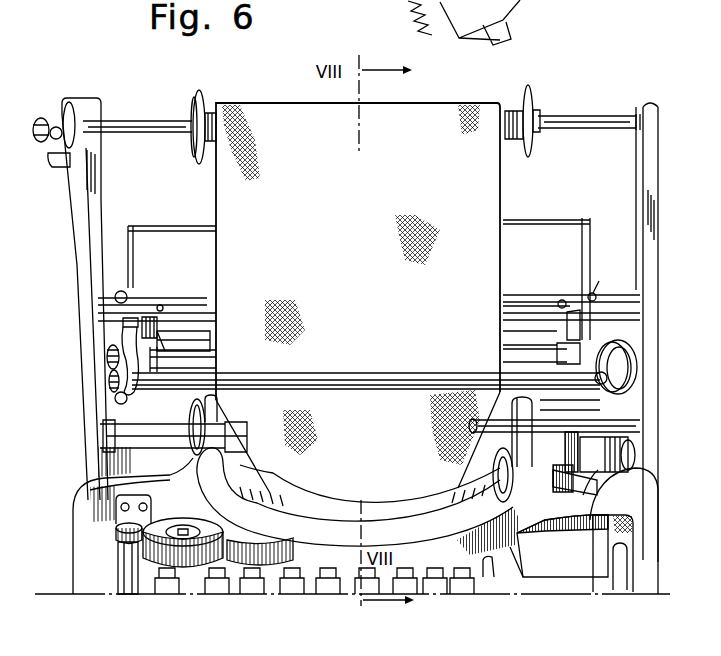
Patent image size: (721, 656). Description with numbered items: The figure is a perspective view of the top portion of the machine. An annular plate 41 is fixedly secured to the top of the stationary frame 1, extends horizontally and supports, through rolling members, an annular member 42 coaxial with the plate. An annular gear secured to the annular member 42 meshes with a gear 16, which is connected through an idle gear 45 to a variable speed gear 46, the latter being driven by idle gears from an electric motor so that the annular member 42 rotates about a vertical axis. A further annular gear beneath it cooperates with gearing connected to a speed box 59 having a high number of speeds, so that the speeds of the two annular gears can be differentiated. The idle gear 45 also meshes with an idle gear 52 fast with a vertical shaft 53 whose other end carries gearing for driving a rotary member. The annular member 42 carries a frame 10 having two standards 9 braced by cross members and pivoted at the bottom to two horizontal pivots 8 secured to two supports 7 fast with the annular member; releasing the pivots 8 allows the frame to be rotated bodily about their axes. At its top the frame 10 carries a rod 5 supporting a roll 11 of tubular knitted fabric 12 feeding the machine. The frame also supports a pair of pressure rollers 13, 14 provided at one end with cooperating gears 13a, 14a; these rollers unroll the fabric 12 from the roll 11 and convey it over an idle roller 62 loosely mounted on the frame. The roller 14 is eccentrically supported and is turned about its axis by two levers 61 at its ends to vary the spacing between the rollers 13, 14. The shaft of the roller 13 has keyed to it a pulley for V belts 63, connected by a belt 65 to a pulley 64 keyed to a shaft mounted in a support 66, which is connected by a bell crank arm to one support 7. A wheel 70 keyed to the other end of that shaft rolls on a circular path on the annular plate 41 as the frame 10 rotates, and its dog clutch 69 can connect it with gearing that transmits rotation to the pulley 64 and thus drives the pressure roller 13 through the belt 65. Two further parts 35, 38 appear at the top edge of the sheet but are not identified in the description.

The frame 1 is at (630, 559).
The rod 5 is at (574, 117).
The support 7 is at (217, 424).
The horizontal pivot 8 is at (150, 441).
The standard 9 is at (642, 178).
The frame 10 is at (69, 268).
The roll 11 is at (479, 102).
The tubular knitted fabric 12 is at (490, 182).
The pressure roller 13 is at (358, 377).
The gear 13a is at (112, 378).
The pressure roller 14 is at (200, 357).
The gear 14a is at (107, 356).
The gear 16 is at (250, 549).
The arm piece 35 is at (507, 34).
The spring 38 is at (396, 2).
The annular plate 41 is at (400, 547).
The annular member 42 is at (358, 513).
The idle gear 45 is at (160, 527).
The variable speed gear 46 is at (120, 582).
The idle gear 52 is at (115, 538).
The vertical shaft 53 is at (118, 562).
The speed box 59 is at (530, 560).
The lever 61 is at (127, 393).
The idle roller 62 is at (512, 339).
The pulley for V belts 63 is at (628, 375).
The pulley 64 is at (656, 484).
The belt 65 is at (640, 456).
The support 66 is at (597, 480).
The dog clutch 69 is at (566, 525).
The wheel 70 is at (462, 466).